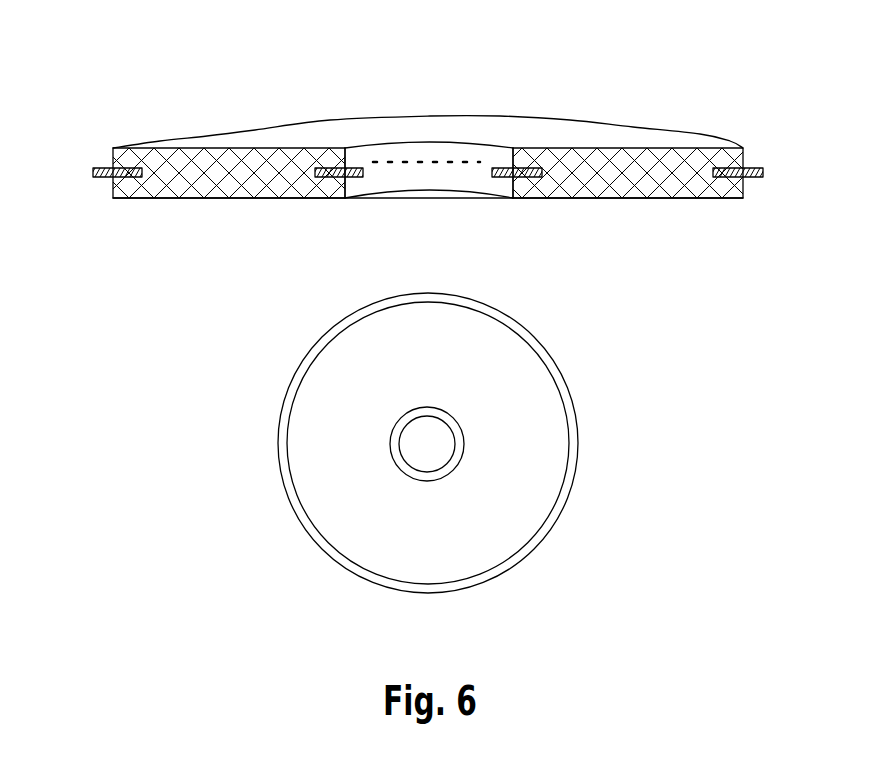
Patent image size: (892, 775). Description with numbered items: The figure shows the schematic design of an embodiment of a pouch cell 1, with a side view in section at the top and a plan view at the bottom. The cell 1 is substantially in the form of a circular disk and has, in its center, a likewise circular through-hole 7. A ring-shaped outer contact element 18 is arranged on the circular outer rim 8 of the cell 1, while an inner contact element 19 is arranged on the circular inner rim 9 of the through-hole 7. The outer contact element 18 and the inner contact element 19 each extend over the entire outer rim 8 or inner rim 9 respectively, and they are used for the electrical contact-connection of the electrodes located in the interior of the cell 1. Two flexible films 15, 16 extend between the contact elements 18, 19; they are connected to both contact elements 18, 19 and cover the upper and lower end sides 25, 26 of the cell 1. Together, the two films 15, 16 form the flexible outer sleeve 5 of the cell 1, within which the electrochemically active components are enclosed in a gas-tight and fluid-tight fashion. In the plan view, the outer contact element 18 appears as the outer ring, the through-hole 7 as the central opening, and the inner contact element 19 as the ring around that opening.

The pouch cell 1 is at (425, 316).
The flexible outer sleeve 5 is at (428, 93).
The through-hole 7 is at (468, 142).
The outer rim 8 is at (109, 150).
The inner rim 9 is at (350, 160).
The flexible film 15 is at (428, 93).
The upper end side 25 is at (255, 132).
The flexible film 16 is at (428, 245).
The lower end side 26 is at (275, 203).
The outer contact element 18 is at (98, 181).
The inner contact element 19 is at (428, 405).